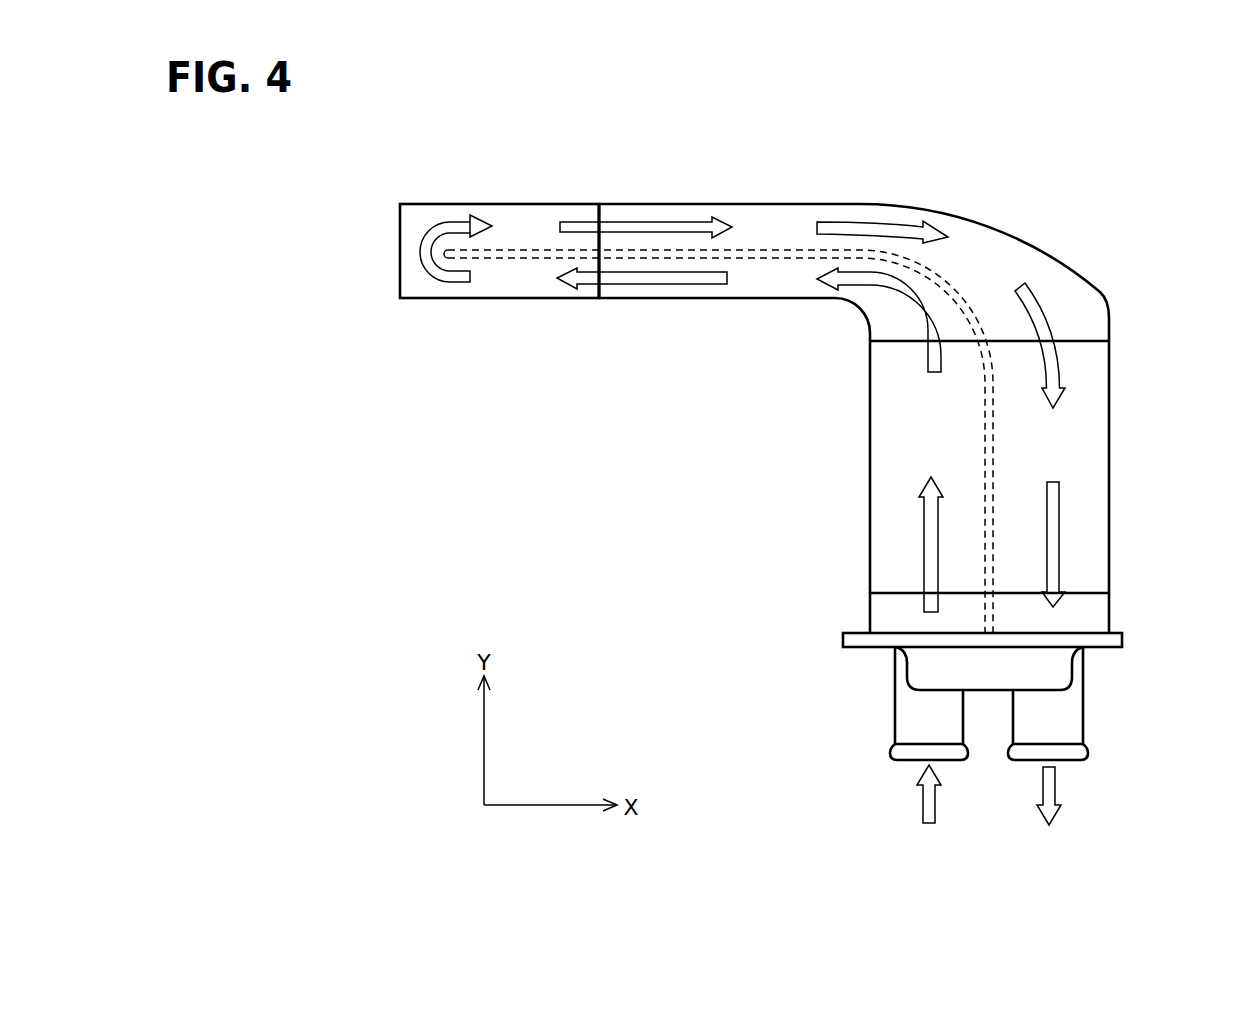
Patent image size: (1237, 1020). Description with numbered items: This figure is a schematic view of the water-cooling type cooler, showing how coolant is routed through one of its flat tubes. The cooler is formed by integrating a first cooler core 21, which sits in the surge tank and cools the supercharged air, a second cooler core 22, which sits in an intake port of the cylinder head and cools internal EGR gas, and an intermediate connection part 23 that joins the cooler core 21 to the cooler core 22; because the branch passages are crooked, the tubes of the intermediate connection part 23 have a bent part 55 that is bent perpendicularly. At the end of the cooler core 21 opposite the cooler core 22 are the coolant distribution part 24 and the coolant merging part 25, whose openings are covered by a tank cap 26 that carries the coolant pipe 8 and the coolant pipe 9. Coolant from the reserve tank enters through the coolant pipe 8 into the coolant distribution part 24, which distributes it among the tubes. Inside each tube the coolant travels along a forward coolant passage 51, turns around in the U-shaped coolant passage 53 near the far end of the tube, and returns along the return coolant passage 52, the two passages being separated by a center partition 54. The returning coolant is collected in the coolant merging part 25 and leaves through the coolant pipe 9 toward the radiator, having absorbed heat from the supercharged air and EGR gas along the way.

The coolant pipe 8 is at (910, 731).
The coolant pipe 9 is at (1067, 720).
The cooler core 21 is at (853, 345).
The cooler core 22 is at (400, 313).
The intermediate connection part 23 is at (997, 238).
The coolant distribution part 24 is at (898, 623).
The coolant merging part 25 is at (1093, 612).
The tank cap 26 is at (918, 668).
The coolant passage 51 is at (652, 282).
The coolant passage 52 is at (625, 228).
The coolant passage 53 is at (420, 252).
The center partition 54 is at (997, 442).
The bent part 55 is at (853, 332).